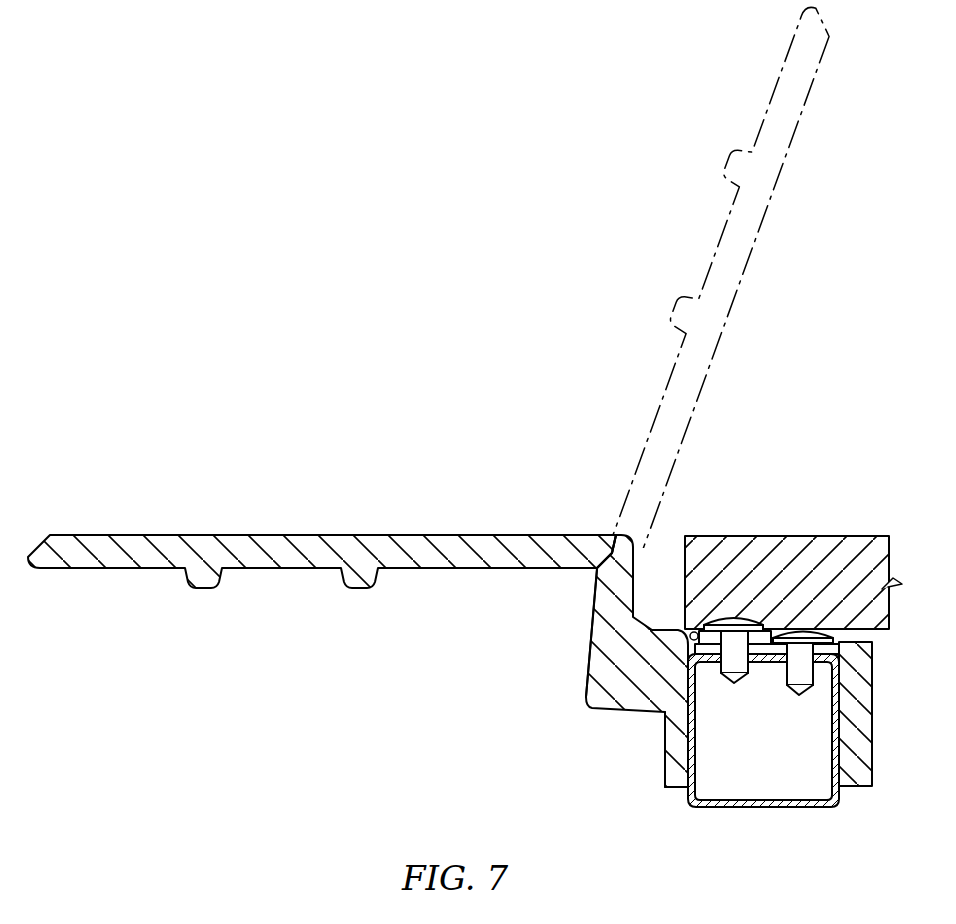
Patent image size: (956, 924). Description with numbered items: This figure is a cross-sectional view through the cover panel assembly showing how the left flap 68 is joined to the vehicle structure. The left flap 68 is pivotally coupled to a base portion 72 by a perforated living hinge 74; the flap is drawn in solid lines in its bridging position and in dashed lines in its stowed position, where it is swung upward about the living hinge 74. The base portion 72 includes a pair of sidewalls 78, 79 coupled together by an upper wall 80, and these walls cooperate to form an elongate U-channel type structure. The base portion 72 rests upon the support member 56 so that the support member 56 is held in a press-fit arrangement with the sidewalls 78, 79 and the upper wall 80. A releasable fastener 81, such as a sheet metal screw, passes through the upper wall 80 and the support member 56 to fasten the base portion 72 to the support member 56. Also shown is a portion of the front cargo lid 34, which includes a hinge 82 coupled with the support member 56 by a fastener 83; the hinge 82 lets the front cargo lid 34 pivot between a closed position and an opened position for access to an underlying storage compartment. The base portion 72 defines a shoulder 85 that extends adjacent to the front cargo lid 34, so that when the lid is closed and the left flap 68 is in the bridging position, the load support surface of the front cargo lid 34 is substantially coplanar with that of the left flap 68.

The left flap 68 is at (157, 535).
The base portion 72 is at (580, 708).
The left perforated living hinge 74 is at (588, 520).
The shoulder 85 is at (590, 602).
The sidewall 78 is at (665, 747).
The front cargo lid 34 is at (840, 540).
The sidewall 79 is at (853, 779).
The upper wall 80 is at (763, 650).
The support member 56 is at (722, 808).
The fastener 83 is at (733, 686).
The releasable fastener 81 is at (798, 696).
The hinge 82 is at (713, 632).